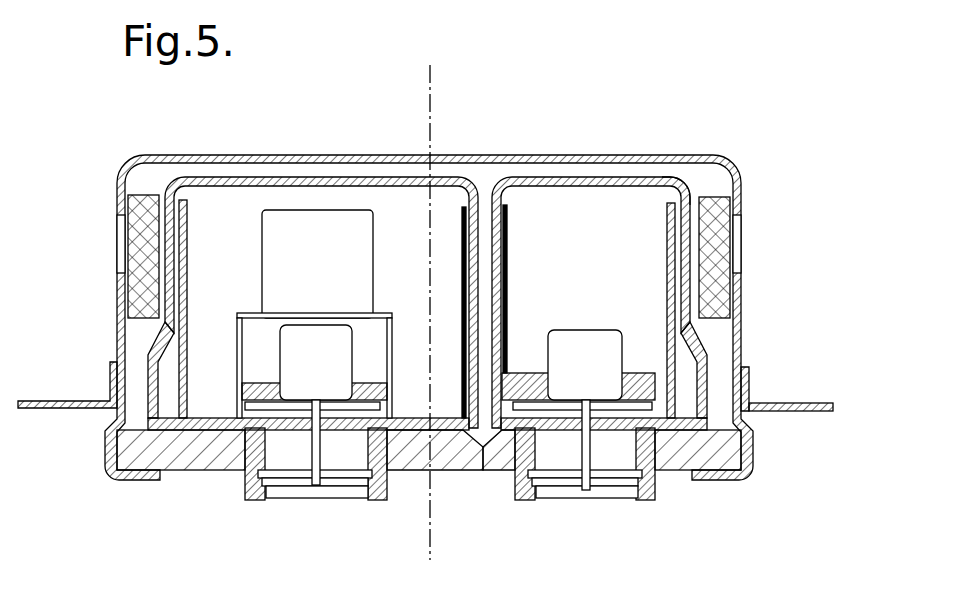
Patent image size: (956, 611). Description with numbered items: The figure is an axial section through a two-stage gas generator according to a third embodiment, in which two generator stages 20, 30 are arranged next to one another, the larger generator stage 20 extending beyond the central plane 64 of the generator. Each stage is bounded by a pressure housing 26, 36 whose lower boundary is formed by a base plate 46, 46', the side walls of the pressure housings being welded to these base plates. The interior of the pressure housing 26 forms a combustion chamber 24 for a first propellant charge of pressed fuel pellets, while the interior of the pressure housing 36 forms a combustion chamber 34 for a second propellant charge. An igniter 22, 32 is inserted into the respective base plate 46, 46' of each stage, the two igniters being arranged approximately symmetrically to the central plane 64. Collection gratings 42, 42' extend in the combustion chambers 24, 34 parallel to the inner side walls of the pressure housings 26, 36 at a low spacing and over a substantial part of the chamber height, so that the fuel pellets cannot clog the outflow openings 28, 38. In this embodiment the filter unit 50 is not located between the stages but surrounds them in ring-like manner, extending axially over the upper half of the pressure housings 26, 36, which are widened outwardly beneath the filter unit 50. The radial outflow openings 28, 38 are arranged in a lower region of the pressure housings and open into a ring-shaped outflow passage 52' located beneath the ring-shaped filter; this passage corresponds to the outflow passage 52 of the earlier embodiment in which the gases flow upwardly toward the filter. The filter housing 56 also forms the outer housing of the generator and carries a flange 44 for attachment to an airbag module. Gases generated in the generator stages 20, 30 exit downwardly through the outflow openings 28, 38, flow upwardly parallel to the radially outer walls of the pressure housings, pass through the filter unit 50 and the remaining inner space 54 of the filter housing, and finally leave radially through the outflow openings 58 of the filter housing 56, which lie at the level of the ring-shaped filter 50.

The generator stage 20 is at (376, 194).
The igniter 22 is at (308, 387).
The combustion chamber 24 is at (235, 203).
The pressure housing 26 is at (305, 178).
The outflow openings 28 is at (152, 365).
The generator stage 30 is at (563, 203).
The igniter 32 is at (600, 388).
The combustion chamber 34 is at (617, 218).
The pressure housing 36 is at (513, 180).
The outflow openings 38 is at (703, 368).
The collection grating 42 is at (181, 256).
The collection grating 42' is at (751, 310).
The flange 44 is at (812, 413).
The base plate 46 is at (300, 494).
The base plate 46' is at (612, 494).
The filter unit 50 is at (143, 267).
The outflow passage 52 is at (76, 382).
The outflow passage 52' is at (783, 385).
The inner space 54 is at (703, 185).
The filter housing 56 is at (125, 168).
The outflow openings 58 is at (120, 227).
The central plane 64 is at (429, 299).